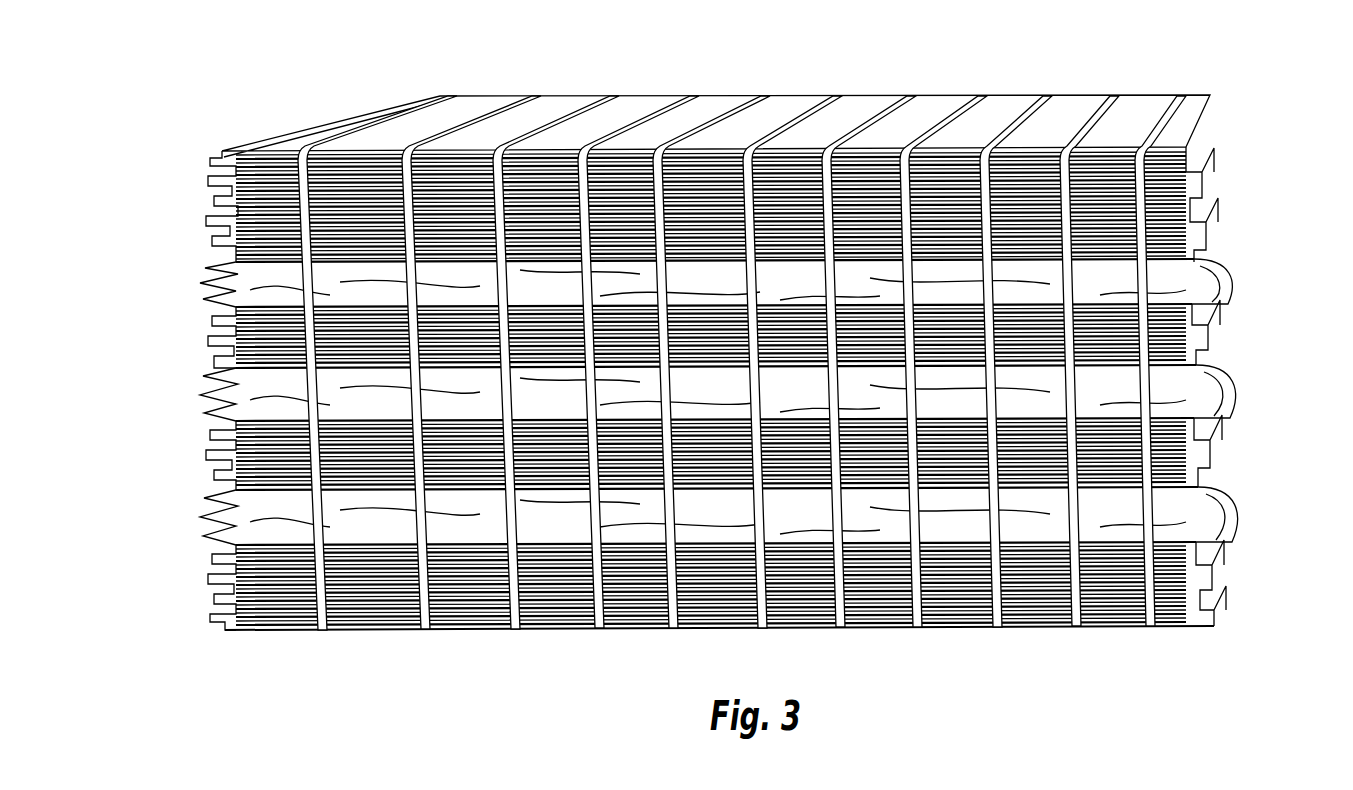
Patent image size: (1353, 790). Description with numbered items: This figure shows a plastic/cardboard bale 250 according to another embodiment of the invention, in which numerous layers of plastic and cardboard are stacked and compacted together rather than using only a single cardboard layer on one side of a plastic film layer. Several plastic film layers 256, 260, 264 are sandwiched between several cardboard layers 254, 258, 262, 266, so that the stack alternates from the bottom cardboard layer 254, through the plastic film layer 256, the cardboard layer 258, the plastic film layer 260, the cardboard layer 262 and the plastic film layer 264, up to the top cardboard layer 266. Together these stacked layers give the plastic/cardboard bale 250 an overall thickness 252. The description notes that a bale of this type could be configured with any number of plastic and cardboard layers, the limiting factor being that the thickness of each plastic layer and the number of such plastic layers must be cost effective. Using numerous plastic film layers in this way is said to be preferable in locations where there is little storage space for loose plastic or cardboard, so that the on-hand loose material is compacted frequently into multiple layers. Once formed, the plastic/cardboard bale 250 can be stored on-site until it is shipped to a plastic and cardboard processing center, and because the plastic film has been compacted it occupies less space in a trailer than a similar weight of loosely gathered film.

The plastic/cardboard bale 250 is at (699, 321).
The thickness 252 is at (699, 365).
The cardboard layer 254 is at (648, 579).
The plastic film layer 256 is at (651, 505).
The cardboard layer 258 is at (647, 447).
The plastic film layer 260 is at (646, 378).
The cardboard layer 262 is at (640, 324).
The plastic film layer 264 is at (654, 266).
The cardboard layer 266 is at (636, 201).